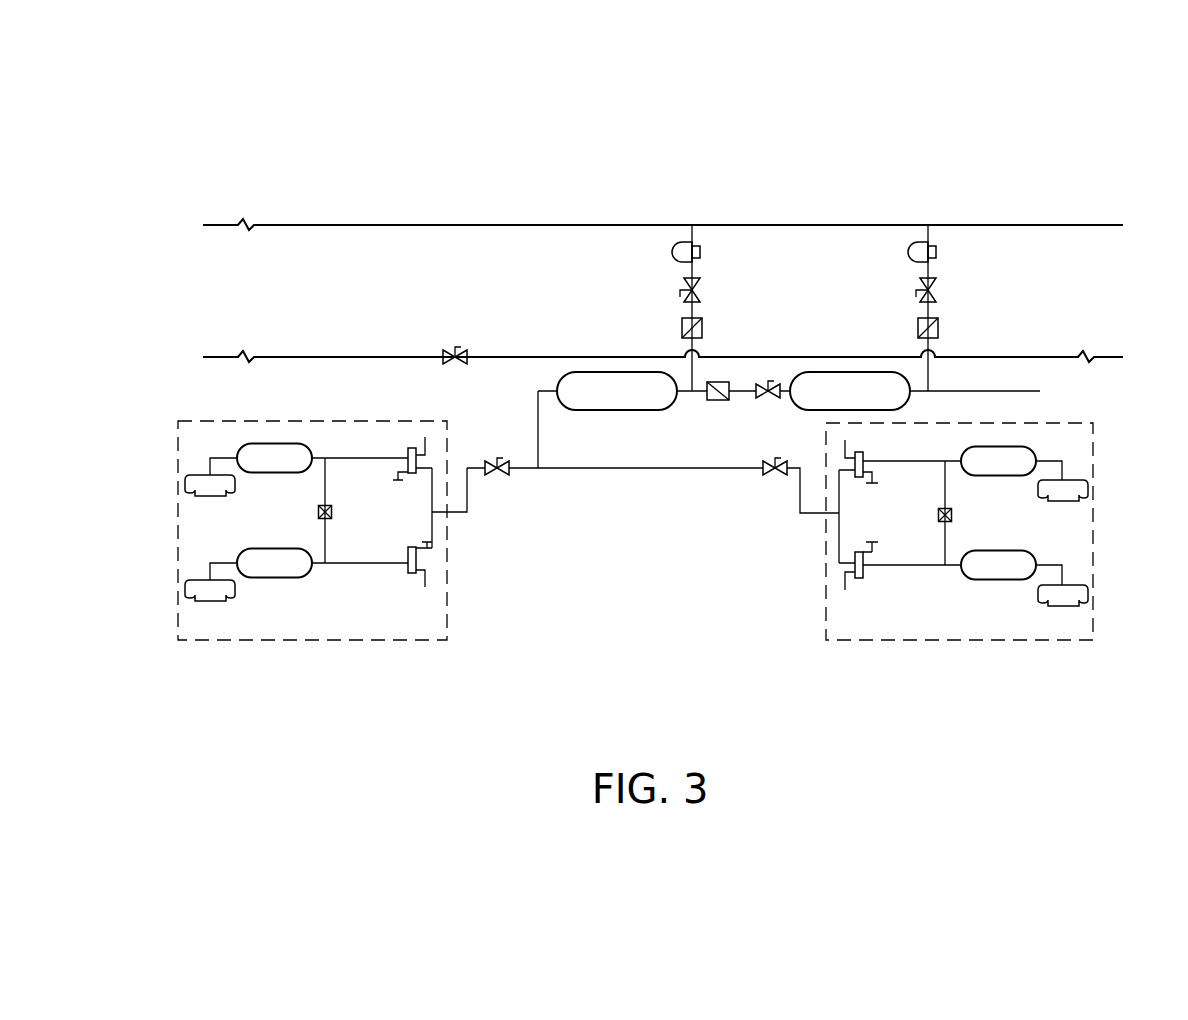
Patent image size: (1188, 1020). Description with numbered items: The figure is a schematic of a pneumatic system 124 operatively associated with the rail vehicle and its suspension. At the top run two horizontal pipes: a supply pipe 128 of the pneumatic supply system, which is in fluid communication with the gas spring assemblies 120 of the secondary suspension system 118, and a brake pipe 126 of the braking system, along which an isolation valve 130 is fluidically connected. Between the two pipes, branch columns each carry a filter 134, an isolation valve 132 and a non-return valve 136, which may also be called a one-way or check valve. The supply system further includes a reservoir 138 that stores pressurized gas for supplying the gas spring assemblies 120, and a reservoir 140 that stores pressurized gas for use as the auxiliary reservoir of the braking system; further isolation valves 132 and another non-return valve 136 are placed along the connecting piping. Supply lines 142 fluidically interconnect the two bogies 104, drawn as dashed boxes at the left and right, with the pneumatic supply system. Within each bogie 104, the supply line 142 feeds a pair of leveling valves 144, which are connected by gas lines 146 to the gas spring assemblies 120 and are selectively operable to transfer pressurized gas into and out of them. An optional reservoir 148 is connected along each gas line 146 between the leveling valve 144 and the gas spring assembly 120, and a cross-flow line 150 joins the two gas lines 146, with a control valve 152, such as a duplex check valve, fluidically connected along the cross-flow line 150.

The bogie 104 is at (300, 648).
The secondary suspension system 118 is at (202, 522).
The gas spring assembly 120 is at (198, 481).
The pneumatic system 124 is at (870, 190).
The brake pipe 126 is at (311, 355).
The supply pipe 128 is at (504, 223).
The isolation valve 130 is at (457, 346).
The isolation valve 132 is at (702, 288).
The filter 134 is at (705, 252).
The non-return valve 136 is at (703, 328).
The reservoir 138 is at (617, 391).
The reservoir 140 is at (850, 391).
The supply line 142 is at (434, 540).
The leveling valve 144 is at (413, 447).
The gas line 146 is at (357, 456).
The reservoir 148 is at (287, 452).
The cross-flow line 150 is at (323, 488).
The control valve 152 is at (333, 512).